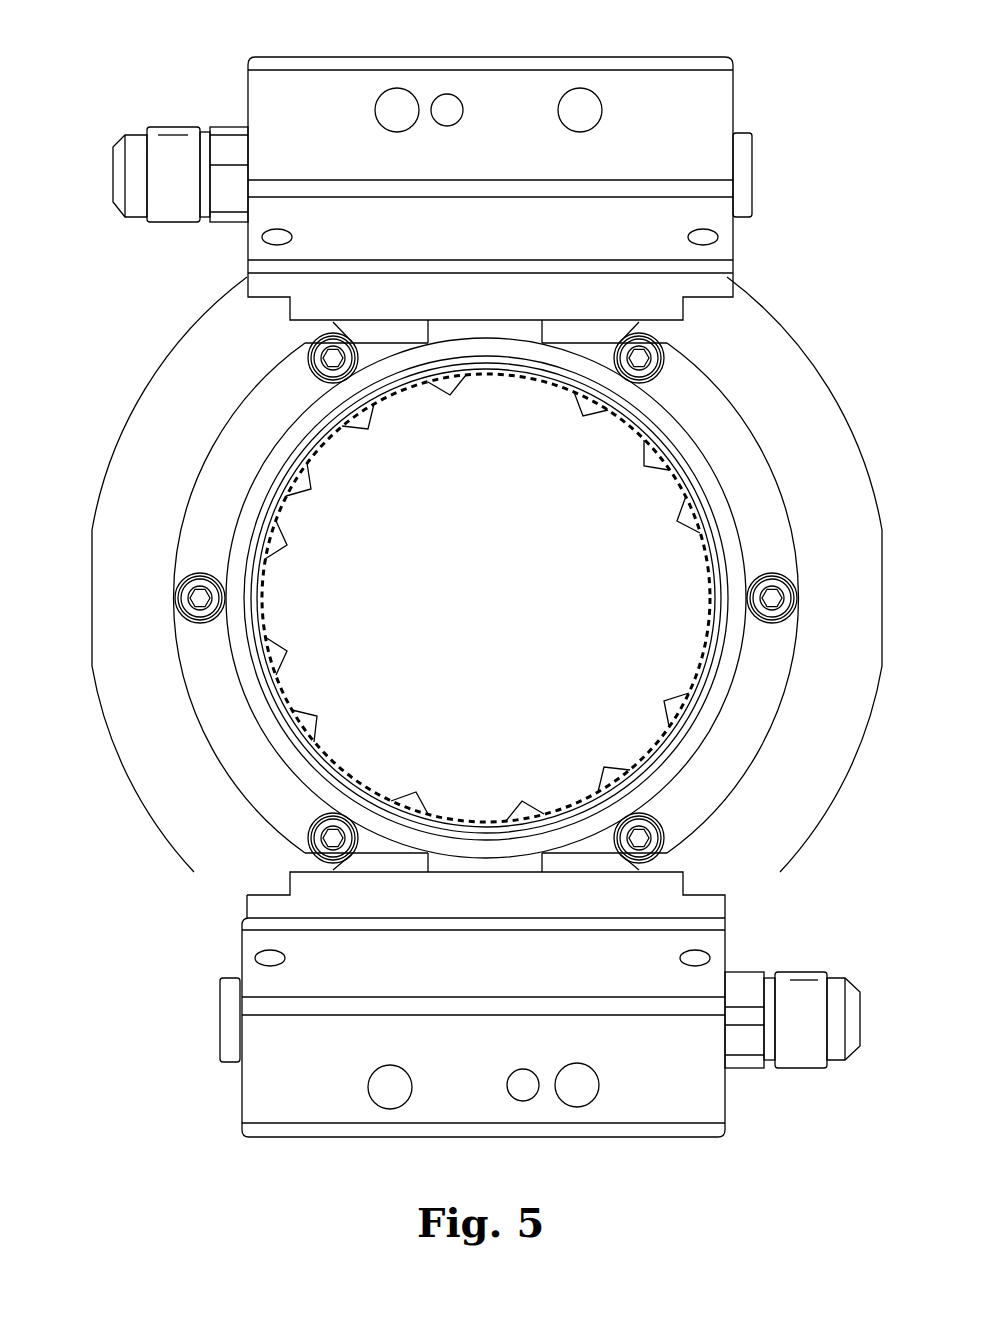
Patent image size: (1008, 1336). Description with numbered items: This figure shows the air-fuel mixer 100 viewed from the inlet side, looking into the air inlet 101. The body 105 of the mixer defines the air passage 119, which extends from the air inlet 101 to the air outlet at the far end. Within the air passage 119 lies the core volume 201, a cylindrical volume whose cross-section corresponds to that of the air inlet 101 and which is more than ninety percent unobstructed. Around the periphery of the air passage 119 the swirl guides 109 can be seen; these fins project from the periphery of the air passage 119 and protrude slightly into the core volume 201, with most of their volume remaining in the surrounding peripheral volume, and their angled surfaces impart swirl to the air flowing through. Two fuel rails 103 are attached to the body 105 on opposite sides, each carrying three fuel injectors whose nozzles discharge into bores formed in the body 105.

The air-fuel mixer 100 is at (112, 56).
The air inlet 101 is at (539, 598).
The fuel rails 103 is at (486, 606).
The body 105 is at (532, 578).
The swirl guides 109 is at (486, 598).
The air passage 119 is at (500, 608).
The core volume 201 is at (560, 598).